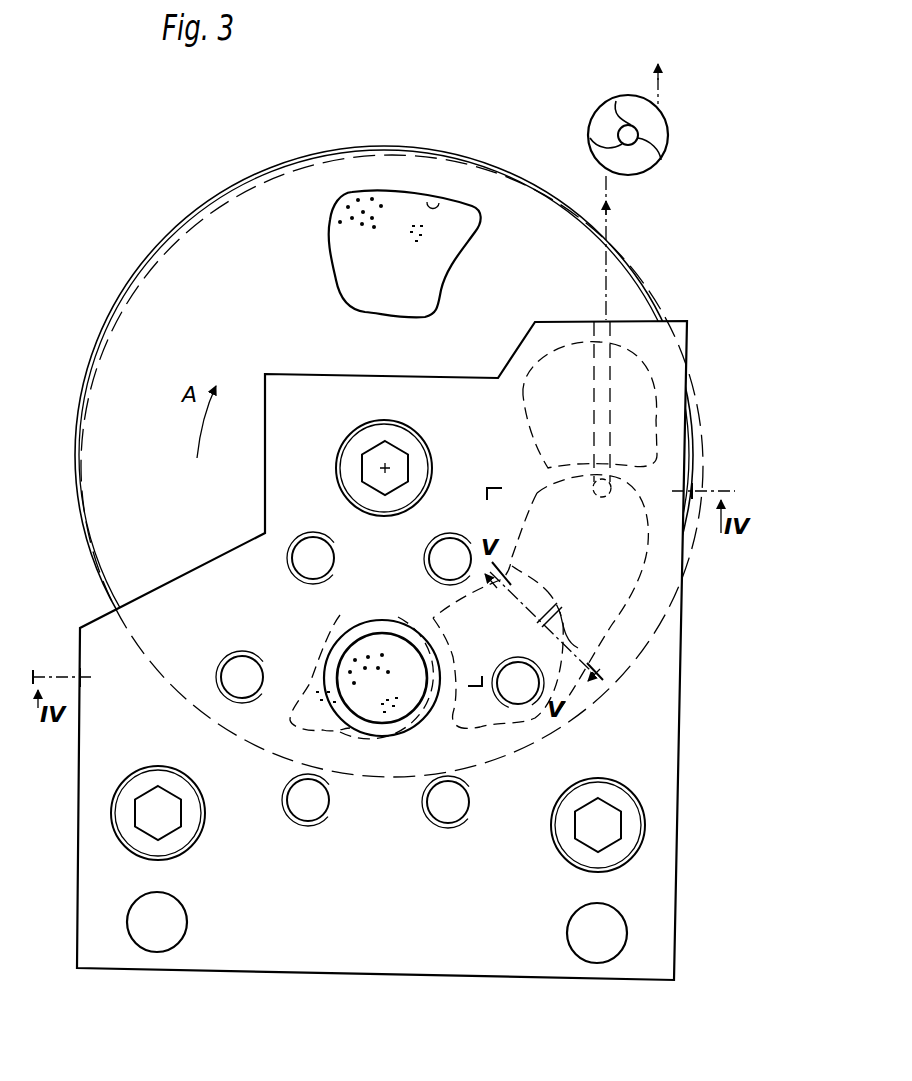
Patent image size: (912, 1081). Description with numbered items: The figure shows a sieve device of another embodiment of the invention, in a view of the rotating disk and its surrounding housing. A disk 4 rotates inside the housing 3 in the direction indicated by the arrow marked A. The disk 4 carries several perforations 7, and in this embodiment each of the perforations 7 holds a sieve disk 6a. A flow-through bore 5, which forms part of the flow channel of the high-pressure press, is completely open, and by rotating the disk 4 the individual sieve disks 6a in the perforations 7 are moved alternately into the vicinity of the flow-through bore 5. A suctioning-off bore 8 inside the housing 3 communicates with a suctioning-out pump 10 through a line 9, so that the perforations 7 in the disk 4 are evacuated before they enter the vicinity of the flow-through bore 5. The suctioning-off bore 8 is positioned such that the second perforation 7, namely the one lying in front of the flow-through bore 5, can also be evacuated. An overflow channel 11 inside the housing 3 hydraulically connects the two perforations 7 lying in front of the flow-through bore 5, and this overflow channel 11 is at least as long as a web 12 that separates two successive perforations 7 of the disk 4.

The housing 3 is at (403, 955).
The disk 4 is at (166, 263).
The flow-through bore 5 is at (392, 722).
The sieve disk 6a is at (380, 212).
The perforation 7 is at (443, 207).
The suctioning-off bore 8 is at (607, 493).
The line 9 is at (610, 222).
The suctioning-out pump 10 is at (612, 98).
The overflow channel 11 is at (556, 604).
The web 12 is at (578, 648).